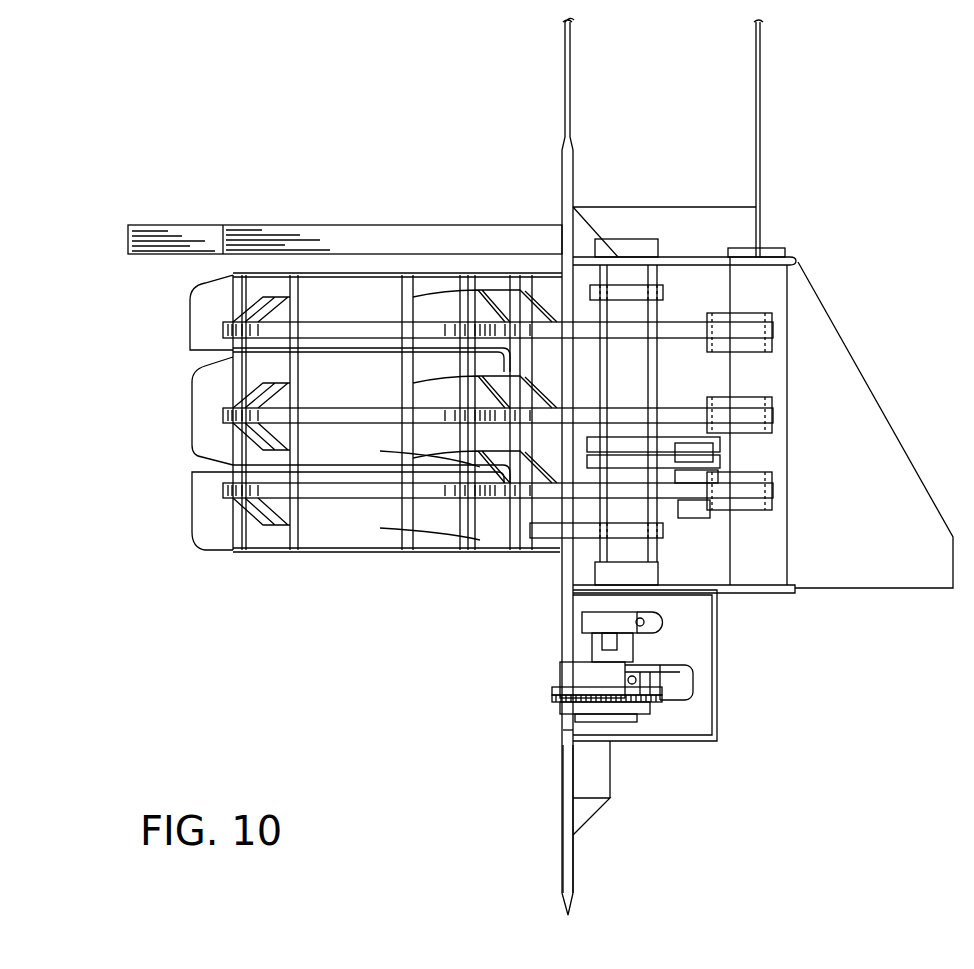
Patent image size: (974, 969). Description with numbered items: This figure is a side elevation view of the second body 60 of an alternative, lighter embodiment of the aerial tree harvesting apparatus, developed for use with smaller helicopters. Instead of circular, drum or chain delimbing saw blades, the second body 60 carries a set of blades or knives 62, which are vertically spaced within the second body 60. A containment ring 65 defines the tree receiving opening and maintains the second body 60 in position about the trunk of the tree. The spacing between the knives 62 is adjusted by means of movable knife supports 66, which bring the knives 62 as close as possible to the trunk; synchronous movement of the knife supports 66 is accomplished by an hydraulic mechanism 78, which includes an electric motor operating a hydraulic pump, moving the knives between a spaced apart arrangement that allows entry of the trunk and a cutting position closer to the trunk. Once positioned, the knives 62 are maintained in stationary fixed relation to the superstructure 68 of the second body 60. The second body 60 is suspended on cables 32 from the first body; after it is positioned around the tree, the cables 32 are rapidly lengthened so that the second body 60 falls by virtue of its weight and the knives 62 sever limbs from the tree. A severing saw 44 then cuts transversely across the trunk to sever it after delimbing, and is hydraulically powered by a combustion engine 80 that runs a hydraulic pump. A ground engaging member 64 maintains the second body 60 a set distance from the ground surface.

The second body 60 is at (188, 175).
The containment ring 65 is at (334, 240).
The cables 32 is at (570, 92).
The hydraulic mechanism 78 is at (710, 543).
The combustion engine 80 is at (883, 567).
The knives 62 is at (280, 352).
The knife supports 66 is at (255, 312).
The superstructure 68 is at (687, 592).
The severing saw 44 is at (552, 700).
The ground engaging member 64 is at (563, 853).